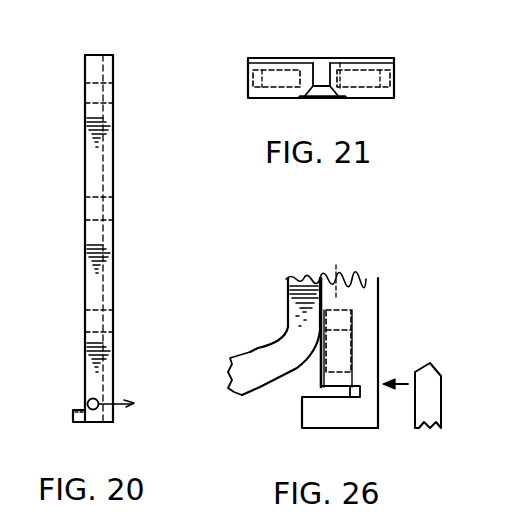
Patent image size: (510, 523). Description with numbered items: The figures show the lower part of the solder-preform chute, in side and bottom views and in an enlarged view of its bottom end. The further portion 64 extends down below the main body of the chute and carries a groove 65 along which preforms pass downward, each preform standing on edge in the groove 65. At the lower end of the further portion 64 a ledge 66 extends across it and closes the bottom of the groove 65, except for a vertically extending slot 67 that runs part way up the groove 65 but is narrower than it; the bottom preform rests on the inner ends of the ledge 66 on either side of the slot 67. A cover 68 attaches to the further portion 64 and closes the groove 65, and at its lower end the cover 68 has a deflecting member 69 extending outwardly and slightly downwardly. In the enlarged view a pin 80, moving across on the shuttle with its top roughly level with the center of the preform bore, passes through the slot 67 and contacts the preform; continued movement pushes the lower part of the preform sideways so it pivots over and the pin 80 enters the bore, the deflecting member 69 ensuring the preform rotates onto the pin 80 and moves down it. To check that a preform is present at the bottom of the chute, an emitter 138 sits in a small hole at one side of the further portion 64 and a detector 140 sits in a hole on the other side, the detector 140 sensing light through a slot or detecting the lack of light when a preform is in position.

In FIG. 20, the further portion 64 is at (105, 294).
In FIG. 26, the further portion 64 is at (366, 288).
In FIG. 20, the groove 65 is at (88, 182).
In FIG. 21, the groove 65 is at (336, 62).
In FIG. 26, the groove 65 is at (335, 314).
In FIG. 20, the ledge 66 is at (75, 426).
In FIG. 21, the ledge 66 is at (262, 90).
In FIG. 26, the ledge 66 is at (310, 411).
In FIG. 21, the slot 67 is at (320, 62).
In FIG. 26, the cover 68 is at (290, 284).
In FIG. 26, the deflecting member 69 is at (250, 354).
In FIG. 26, the pin 80 is at (420, 410).
In FIG. 20, the emitter 138 is at (89, 400).
In FIG. 21, the emitter 138 is at (390, 82).
In FIG. 21, the detector 140 is at (255, 80).